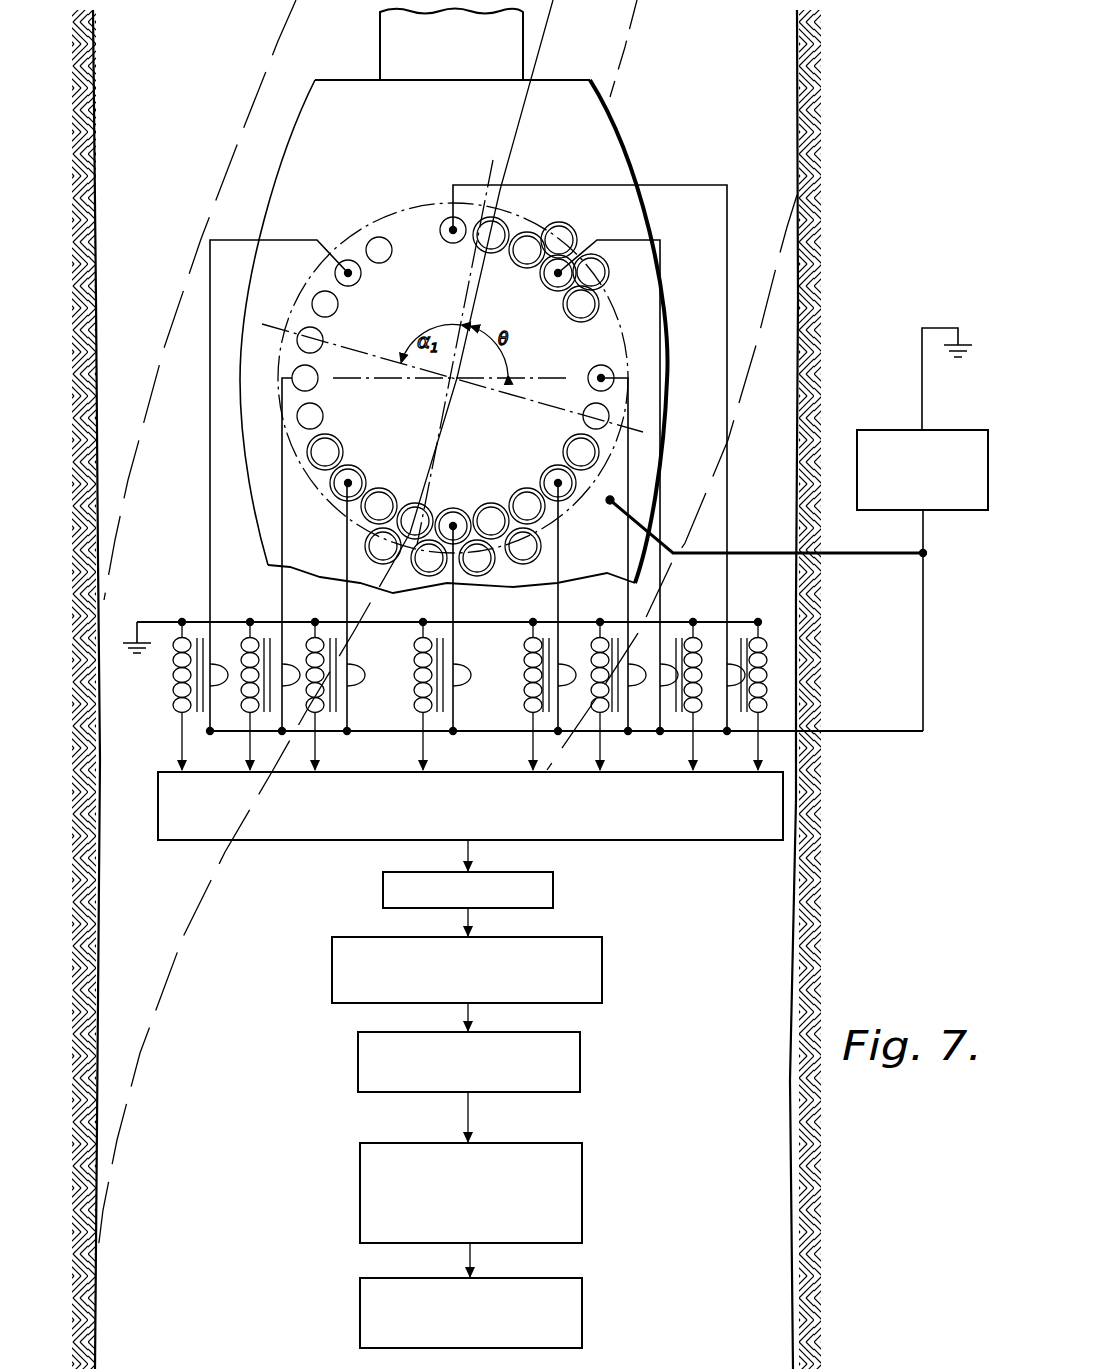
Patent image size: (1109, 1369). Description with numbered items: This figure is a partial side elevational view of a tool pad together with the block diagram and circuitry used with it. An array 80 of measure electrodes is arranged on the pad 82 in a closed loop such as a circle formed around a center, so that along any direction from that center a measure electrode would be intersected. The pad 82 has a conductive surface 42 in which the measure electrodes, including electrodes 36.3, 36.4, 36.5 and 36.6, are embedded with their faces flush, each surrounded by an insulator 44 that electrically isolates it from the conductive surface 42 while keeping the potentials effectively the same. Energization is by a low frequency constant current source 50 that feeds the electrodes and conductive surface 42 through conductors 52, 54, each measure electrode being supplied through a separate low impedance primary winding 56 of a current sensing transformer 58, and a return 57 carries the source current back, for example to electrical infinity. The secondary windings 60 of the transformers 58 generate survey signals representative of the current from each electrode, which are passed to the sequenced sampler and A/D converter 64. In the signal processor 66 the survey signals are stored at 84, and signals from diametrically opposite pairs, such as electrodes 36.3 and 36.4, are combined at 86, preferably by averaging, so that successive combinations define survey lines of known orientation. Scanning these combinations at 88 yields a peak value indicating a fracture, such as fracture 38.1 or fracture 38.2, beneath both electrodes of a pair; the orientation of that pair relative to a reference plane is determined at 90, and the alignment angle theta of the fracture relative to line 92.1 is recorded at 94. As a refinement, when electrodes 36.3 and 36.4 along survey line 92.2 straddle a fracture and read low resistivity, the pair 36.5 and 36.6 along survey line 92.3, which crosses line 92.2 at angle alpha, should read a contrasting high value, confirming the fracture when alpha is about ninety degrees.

The conductive pad surface 42 is at (285, 165).
The pad 82 is at (612, 128).
The array of measure electrodes 80 is at (640, 330).
The measure electrode 36.3 is at (487, 232).
The measure electrode 36.4 is at (408, 508).
The measure electrode 36.5 is at (312, 308).
The measure electrode 36.6 is at (610, 412).
The insulator 44 is at (608, 265).
The reference line 92.1 is at (535, 379).
The survey line 92.2 is at (473, 298).
The survey line 92.3 is at (360, 352).
The fracture 38.1 is at (160, 986).
The fracture 38.2 is at (738, 402).
The constant current source 50 is at (877, 430).
The conductor 52 is at (870, 556).
The conductor 54 is at (883, 732).
The primary winding 56 is at (722, 668).
The return 57 is at (960, 342).
The current sensing transformer 58 is at (201, 625).
The secondary winding 60 is at (175, 670).
The sequenced sampler and A/D converter 64 is at (180, 838).
The signal processor 66 is at (303, 1119).
The storage 84 is at (383, 895).
The combining step 86 is at (602, 993).
The peak detection step 88 is at (358, 1080).
The orientation determination step 90 is at (360, 1188).
The recording step 94 is at (360, 1322).